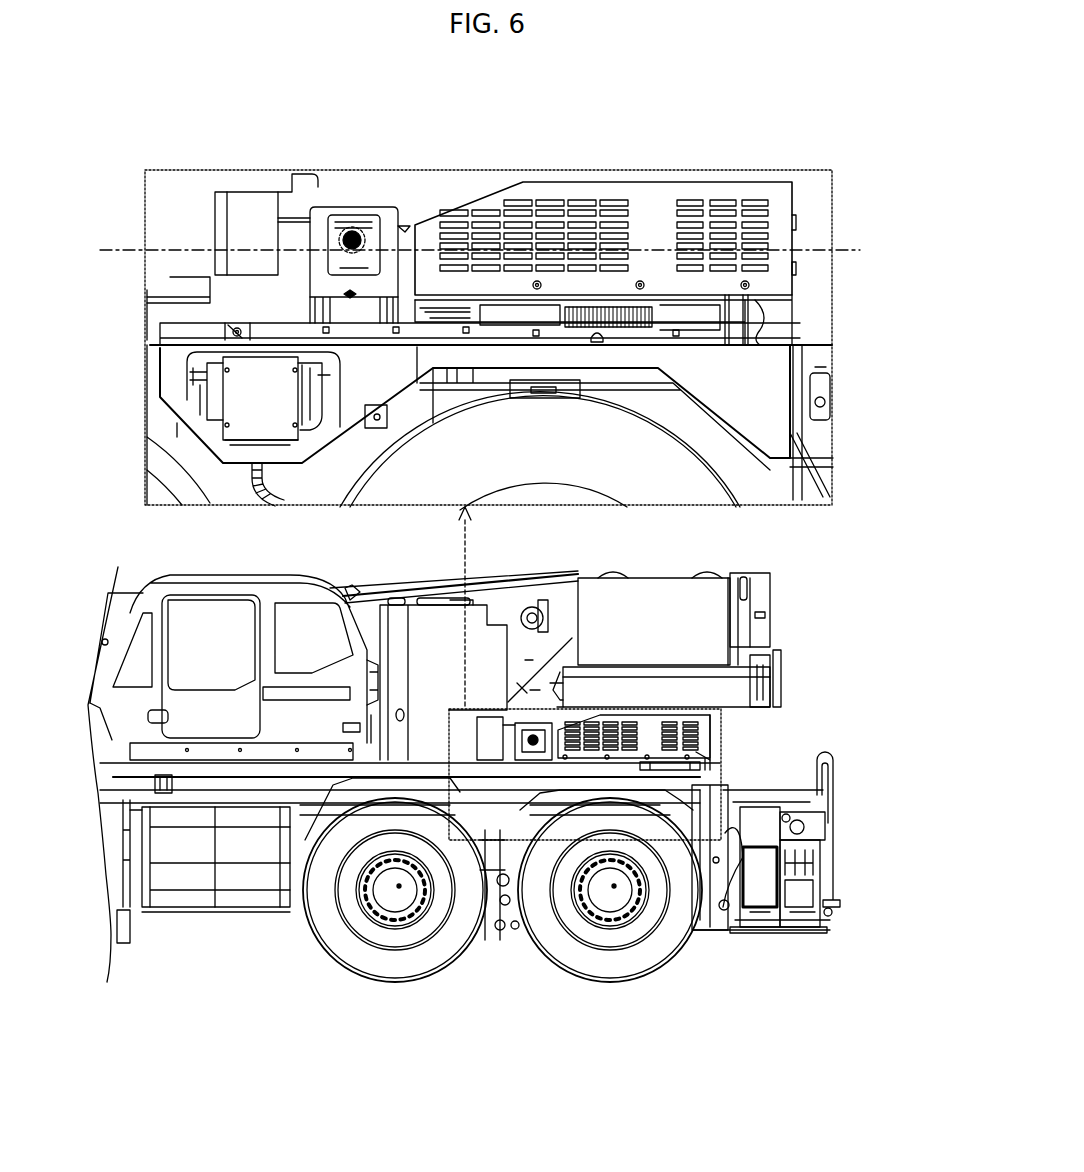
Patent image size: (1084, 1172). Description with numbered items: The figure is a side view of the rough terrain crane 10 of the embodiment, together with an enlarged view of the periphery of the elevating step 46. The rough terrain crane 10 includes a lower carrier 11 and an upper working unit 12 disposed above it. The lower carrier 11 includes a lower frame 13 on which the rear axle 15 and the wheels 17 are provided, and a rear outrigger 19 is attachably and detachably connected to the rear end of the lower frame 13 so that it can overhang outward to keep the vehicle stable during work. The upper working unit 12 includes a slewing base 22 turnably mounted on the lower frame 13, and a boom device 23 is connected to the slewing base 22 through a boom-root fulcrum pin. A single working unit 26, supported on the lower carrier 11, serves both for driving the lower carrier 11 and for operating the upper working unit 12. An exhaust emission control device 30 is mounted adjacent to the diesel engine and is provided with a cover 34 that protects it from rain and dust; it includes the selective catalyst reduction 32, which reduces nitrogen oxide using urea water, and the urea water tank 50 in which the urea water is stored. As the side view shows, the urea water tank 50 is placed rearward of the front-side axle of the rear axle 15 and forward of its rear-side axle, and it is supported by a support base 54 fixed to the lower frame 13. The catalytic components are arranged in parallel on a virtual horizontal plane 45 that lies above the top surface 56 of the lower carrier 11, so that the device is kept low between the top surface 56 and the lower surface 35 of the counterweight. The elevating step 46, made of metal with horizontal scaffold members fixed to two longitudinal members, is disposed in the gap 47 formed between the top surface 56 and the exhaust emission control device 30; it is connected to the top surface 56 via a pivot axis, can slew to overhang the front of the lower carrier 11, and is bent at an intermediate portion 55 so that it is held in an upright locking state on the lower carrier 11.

The rough terrain crane 10 is at (160, 560).
The lower carrier 11 is at (850, 815).
The upper working unit 12 is at (781, 603).
The lower frame 13 is at (760, 360).
The rear axle 15 is at (393, 1000).
The wheel 17 is at (444, 952).
The rear outrigger 19 is at (795, 941).
The slewing base 22 is at (770, 691).
The boom device 23 is at (353, 586).
The single working unit 26 is at (272, 590).
The exhaust emission control device 30 is at (647, 441).
The selective catalyst reduction (SCR) 32 is at (684, 222).
The cover 34 is at (763, 282).
The lower surface of the counterweight 35 is at (748, 707).
The virtual horizontal plane 45 is at (118, 248).
The elevating step 46 is at (690, 331).
The gap 47 is at (547, 321).
The urea water tank 50 is at (352, 203).
The support base 54 is at (333, 400).
The intermediate portion 55 is at (226, 317).
The top surface of the lower carrier 56 is at (267, 343).